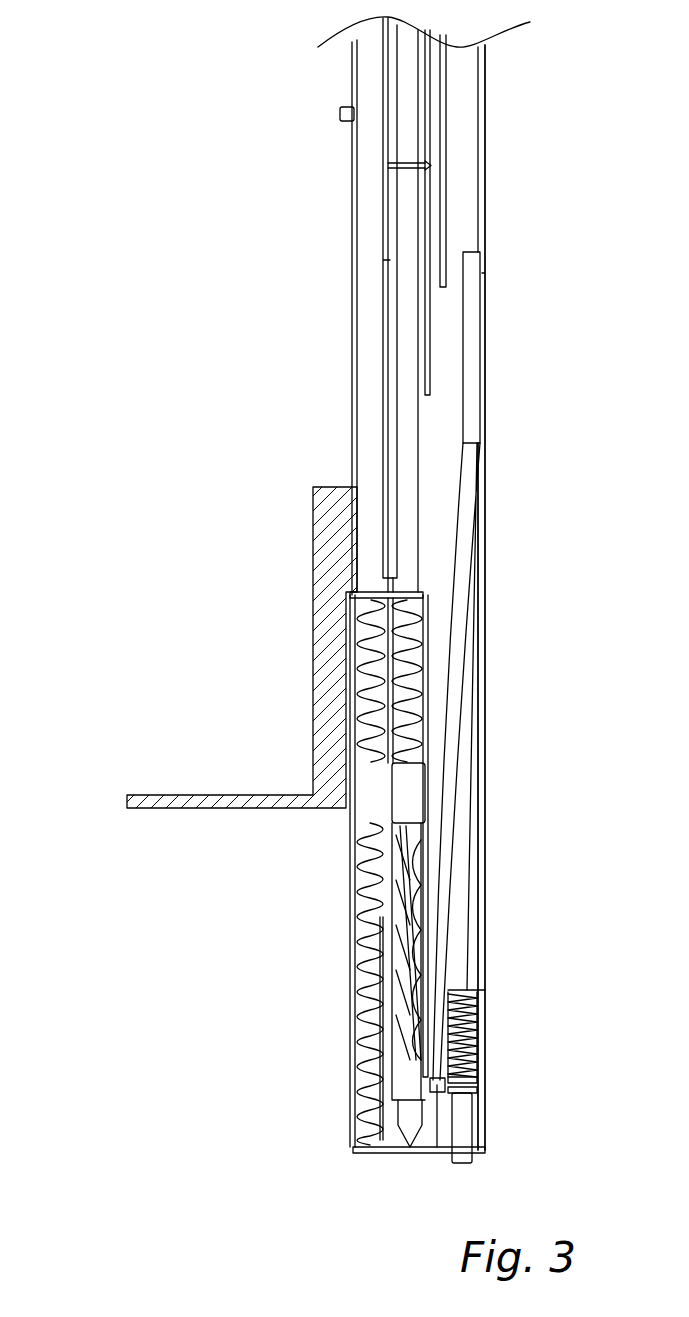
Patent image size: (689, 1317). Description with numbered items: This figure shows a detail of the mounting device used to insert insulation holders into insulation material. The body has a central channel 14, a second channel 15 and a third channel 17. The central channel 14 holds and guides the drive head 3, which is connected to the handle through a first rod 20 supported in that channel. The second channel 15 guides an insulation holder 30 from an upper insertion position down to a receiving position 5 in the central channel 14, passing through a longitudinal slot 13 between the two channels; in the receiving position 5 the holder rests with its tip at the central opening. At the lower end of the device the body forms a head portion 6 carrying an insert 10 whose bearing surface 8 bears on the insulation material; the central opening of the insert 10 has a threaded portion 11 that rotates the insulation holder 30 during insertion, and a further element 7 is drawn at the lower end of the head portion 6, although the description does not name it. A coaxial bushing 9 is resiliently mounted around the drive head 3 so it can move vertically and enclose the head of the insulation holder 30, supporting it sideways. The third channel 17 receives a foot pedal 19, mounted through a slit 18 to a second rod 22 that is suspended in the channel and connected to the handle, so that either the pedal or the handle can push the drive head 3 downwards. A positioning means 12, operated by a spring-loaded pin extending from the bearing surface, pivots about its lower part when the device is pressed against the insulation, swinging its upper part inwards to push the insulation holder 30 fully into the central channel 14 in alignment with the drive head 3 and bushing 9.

The drive head 3 is at (436, 802).
The receiving position 5 is at (514, 905).
The head portion 6 is at (517, 1076).
The bottom closure 7 is at (408, 1163).
The bearing surface 8 is at (365, 1150).
The bushing 9 is at (412, 788).
The insert 10 is at (432, 1148).
The threaded portion 11 is at (396, 1157).
The positioning means 12 is at (455, 688).
The longitudinal slot 13 is at (442, 468).
The central channel 14 is at (418, 325).
The second channel 15 is at (463, 205).
The third channel 17 is at (388, 360).
The slit 18 is at (339, 862).
The foot pedal 19 is at (140, 795).
The first rod 20 is at (410, 513).
The second rod 22 is at (367, 432).
The insulation holder 30 is at (417, 878).